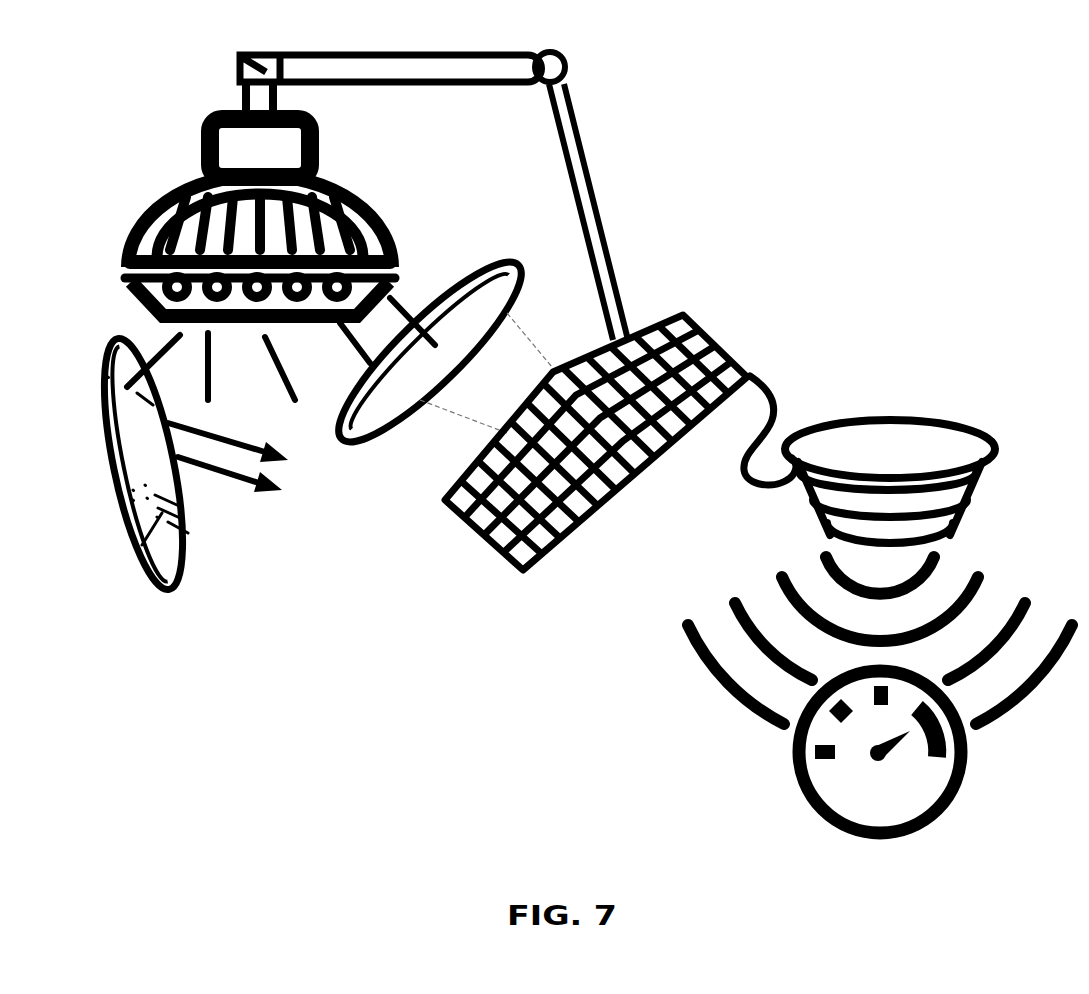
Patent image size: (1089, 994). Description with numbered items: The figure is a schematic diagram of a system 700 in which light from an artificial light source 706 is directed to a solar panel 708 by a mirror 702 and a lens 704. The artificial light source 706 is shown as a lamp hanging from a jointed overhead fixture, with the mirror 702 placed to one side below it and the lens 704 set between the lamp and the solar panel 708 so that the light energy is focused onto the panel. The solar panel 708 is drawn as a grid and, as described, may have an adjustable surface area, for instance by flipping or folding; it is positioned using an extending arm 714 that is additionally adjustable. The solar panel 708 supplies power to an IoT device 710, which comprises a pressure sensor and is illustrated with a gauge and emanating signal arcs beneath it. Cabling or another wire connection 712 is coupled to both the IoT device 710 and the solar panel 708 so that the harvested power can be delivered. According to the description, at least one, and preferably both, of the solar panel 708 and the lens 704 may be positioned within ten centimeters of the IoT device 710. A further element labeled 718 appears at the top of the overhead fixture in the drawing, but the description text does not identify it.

The system 700 is at (980, 69).
The mirror 702 is at (142, 564).
The lens 704 is at (427, 297).
The artificial light source 706 is at (181, 188).
The solar panel 708 is at (527, 571).
The IoT device 710 is at (930, 457).
The wire connection 712 is at (765, 383).
The extending arm 714 is at (608, 232).
The mounting bar 718 is at (243, 57).